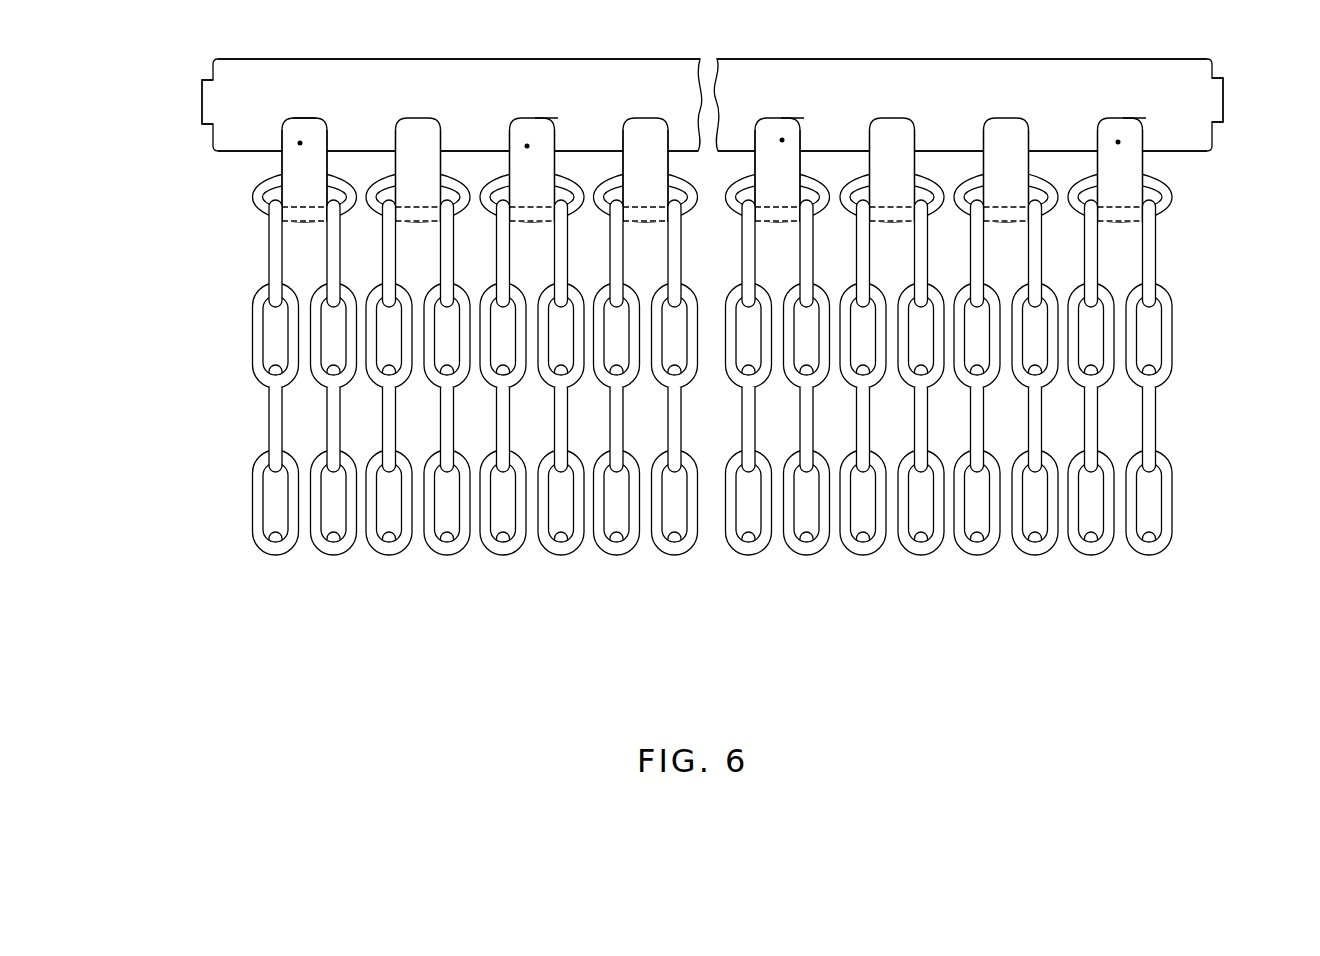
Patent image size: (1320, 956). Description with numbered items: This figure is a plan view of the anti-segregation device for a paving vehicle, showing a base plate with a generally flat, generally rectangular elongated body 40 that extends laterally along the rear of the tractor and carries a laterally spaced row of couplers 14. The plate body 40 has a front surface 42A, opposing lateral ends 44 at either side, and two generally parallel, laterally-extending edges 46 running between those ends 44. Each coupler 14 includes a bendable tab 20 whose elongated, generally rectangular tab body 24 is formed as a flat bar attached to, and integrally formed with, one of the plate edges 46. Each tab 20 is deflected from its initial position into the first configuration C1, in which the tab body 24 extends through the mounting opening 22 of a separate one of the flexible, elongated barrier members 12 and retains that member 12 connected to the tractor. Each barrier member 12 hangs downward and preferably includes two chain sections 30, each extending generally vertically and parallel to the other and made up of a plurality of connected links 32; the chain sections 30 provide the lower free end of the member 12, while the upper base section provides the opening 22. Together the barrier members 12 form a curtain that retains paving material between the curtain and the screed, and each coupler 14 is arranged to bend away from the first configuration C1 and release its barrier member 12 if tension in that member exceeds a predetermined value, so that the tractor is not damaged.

The barrier member 12 is at (711, 426).
The coupler 14 is at (298, 97).
The bendable tab 20 is at (415, 116).
The mounting opening 22 is at (270, 196).
The tab body 24 is at (280, 146).
The chain section 30 is at (266, 421).
The link 32 is at (272, 256).
The elongated body 40 is at (628, 75).
The front surface 42A is at (608, 92).
The lateral end 44 is at (203, 100).
The edge 46 is at (955, 58).
The first configuration C1 is at (300, 143).